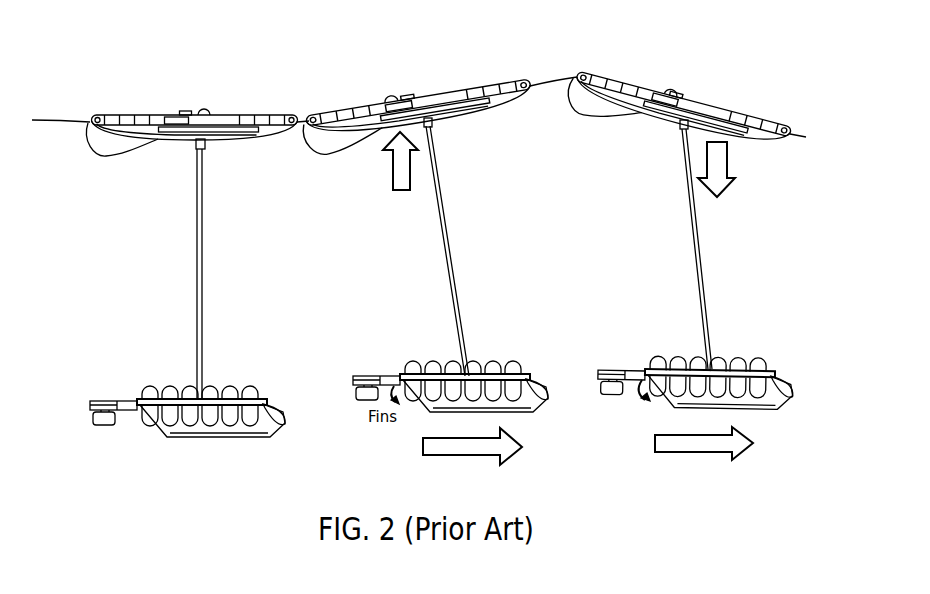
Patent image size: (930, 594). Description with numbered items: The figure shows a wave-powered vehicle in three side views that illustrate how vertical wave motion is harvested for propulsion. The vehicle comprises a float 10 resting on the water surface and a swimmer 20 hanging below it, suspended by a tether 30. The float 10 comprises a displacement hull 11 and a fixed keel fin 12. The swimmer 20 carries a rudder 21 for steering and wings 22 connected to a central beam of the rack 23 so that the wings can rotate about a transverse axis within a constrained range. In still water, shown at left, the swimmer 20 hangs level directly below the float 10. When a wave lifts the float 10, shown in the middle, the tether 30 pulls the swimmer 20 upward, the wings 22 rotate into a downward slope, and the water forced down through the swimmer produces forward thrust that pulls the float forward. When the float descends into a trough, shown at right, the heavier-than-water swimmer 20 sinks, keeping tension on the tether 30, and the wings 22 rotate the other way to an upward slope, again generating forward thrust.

The float 10 is at (204, 110).
The displacement hull 11 is at (178, 130).
The fixed keel fin 12 is at (98, 158).
The swimmer 20 is at (179, 412).
The rudder 21 is at (97, 403).
The wings 22 is at (200, 385).
The rack 23 is at (282, 398).
The tether 30 is at (203, 267).